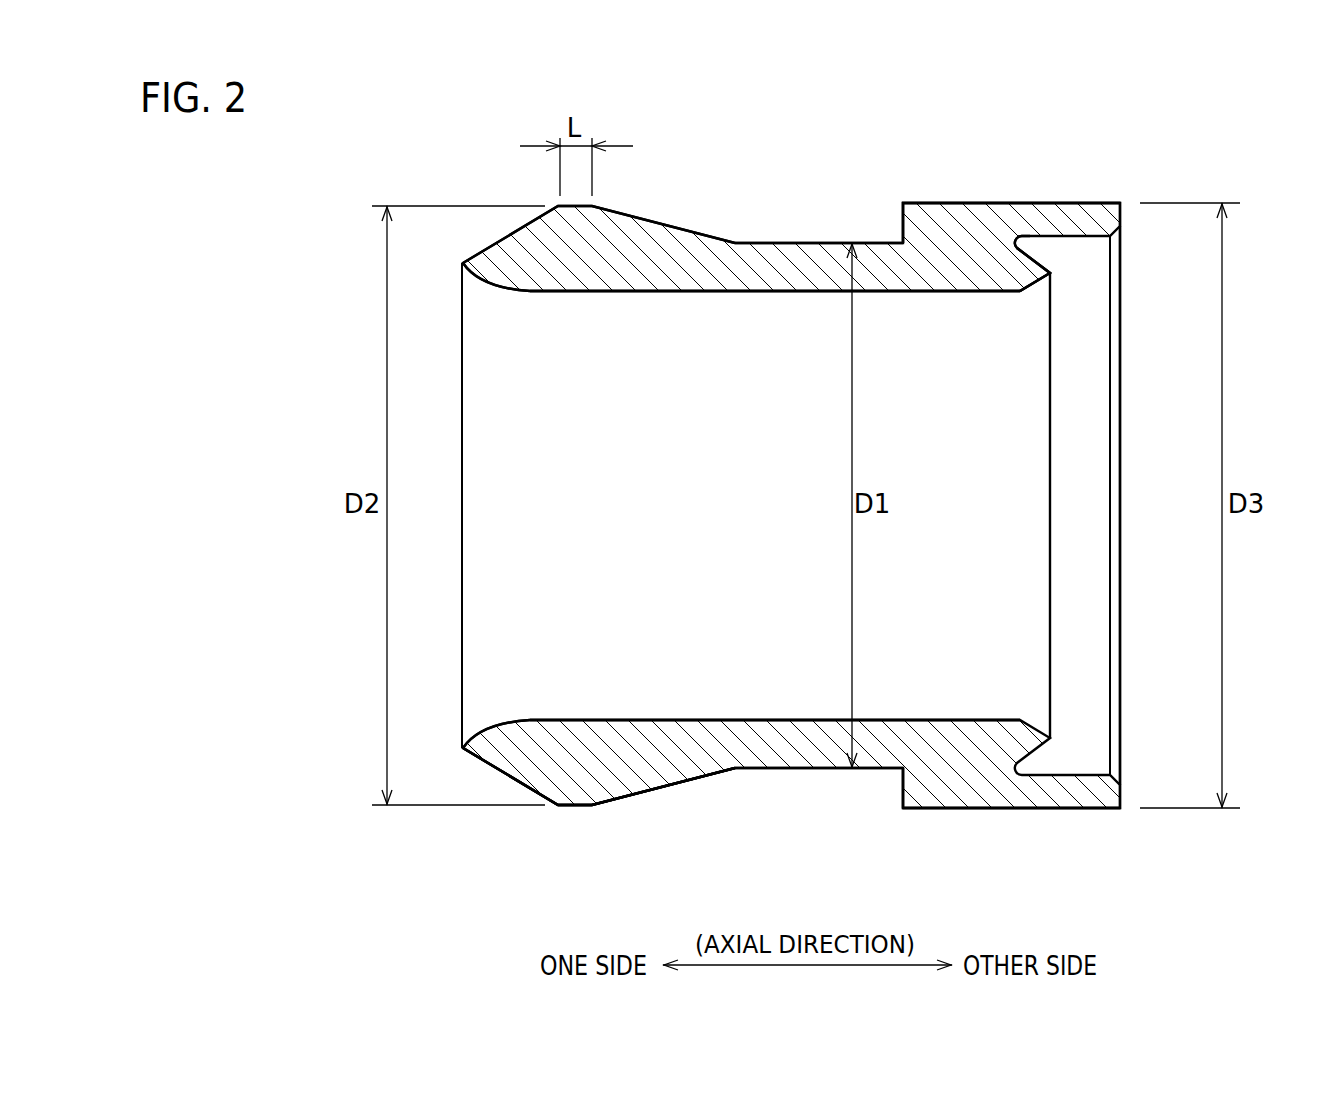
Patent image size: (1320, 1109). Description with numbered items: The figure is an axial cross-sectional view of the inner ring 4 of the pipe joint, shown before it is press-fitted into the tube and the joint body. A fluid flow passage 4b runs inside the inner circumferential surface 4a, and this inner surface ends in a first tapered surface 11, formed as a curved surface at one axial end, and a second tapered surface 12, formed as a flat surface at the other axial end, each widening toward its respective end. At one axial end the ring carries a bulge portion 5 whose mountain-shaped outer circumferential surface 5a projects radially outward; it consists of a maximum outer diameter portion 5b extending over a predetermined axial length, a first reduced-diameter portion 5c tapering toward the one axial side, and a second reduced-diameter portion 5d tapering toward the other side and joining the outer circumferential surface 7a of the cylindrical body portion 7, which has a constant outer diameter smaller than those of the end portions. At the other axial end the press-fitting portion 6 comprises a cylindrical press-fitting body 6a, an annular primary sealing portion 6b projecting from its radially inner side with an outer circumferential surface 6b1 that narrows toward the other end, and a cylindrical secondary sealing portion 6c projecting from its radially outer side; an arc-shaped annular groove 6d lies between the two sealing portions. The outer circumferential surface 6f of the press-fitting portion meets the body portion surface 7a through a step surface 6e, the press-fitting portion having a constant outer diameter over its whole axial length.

The inner ring 4 is at (742, 172).
The inner circumferential surface 4a is at (748, 293).
The fluid flow passage 4b is at (696, 518).
The bulge portion 5 is at (660, 240).
The outer circumferential surface 5a is at (669, 862).
The maximum outer diameter portion 5b is at (575, 806).
The first reduced-diameter portion 5c is at (517, 778).
The second reduced-diameter portion 5d is at (628, 797).
The press-fitting portion 6 is at (943, 200).
The press-fitting body 6a is at (958, 268).
The primary sealing portion 6b is at (1052, 275).
The outer circumferential surface 6b1 is at (1036, 262).
The secondary sealing portion 6c is at (1086, 210).
The annular groove 6d is at (1022, 236).
The step surface 6e is at (893, 776).
The outer circumferential surface 6f is at (1022, 809).
The body portion 7 is at (781, 244).
The outer circumferential surface 7a is at (776, 769).
The first tapered surface 11 is at (496, 290).
The second tapered surface 12 is at (1024, 292).